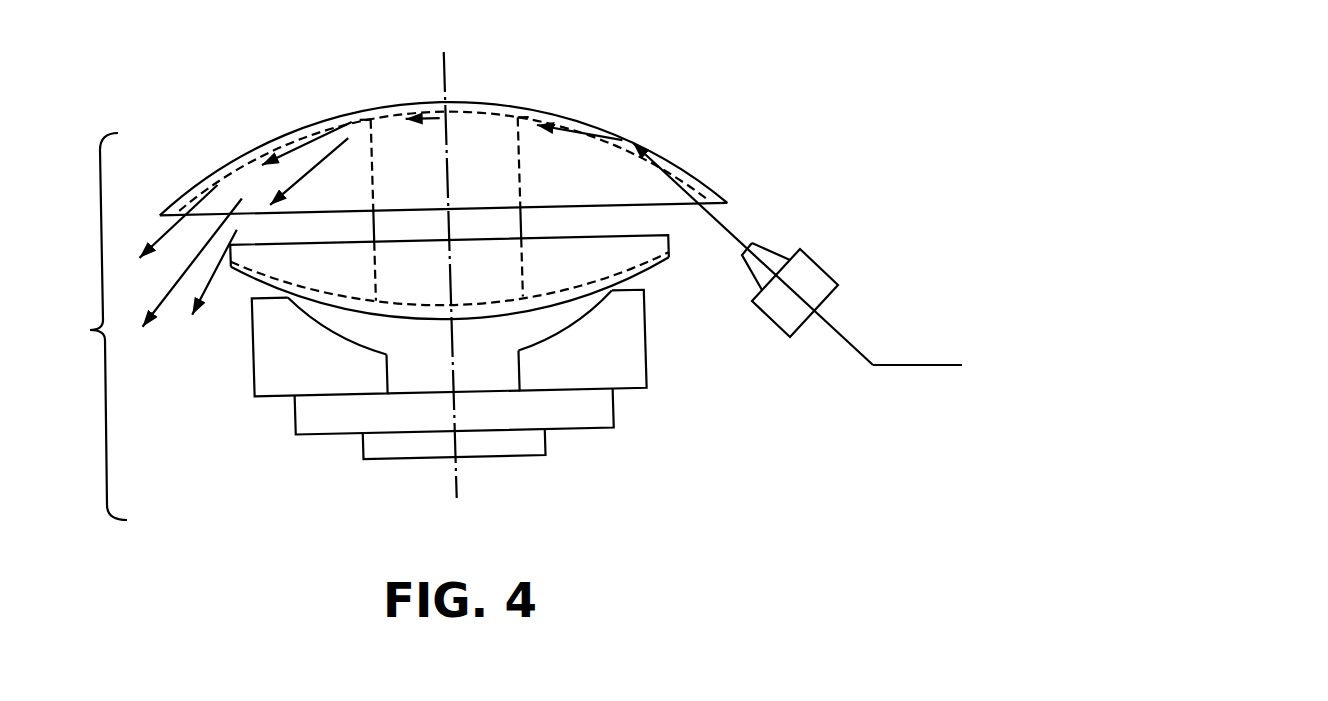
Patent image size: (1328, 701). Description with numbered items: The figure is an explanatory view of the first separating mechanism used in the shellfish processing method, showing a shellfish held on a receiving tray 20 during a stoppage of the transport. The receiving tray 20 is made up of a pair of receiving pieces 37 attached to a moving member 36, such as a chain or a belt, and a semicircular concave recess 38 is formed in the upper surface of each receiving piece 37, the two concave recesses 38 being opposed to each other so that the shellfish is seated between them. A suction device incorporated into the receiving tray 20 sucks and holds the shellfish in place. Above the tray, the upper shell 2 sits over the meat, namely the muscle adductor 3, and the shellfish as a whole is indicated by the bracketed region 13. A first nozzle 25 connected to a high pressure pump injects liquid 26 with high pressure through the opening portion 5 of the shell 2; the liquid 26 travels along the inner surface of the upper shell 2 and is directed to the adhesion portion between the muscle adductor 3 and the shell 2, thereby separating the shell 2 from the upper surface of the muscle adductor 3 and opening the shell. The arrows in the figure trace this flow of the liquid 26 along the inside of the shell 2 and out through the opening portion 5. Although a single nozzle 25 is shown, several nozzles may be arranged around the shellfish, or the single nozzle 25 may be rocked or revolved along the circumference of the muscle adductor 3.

The shell 2 is at (509, 102).
The muscle adductor 3 is at (387, 118).
The opening portion 5 is at (232, 232).
The optical unit 13 is at (88, 326).
The receiving tray 20 is at (454, 412).
The first nozzle 25 is at (812, 262).
The liquid 26 is at (720, 223).
The moving member 36 is at (434, 458).
The receiving piece 37 is at (627, 355).
The concave recess 38 is at (365, 342).